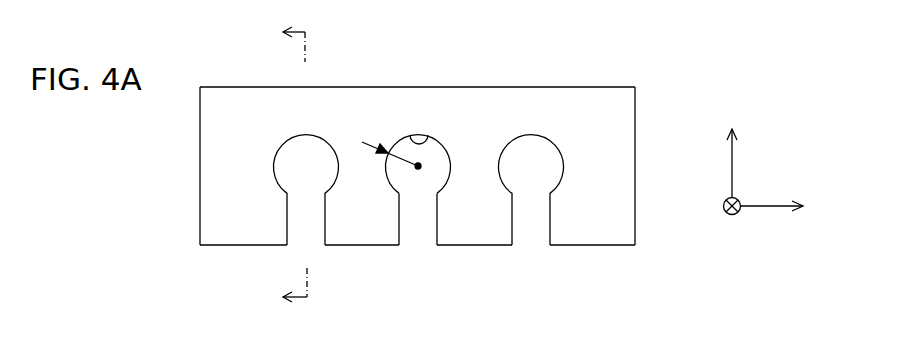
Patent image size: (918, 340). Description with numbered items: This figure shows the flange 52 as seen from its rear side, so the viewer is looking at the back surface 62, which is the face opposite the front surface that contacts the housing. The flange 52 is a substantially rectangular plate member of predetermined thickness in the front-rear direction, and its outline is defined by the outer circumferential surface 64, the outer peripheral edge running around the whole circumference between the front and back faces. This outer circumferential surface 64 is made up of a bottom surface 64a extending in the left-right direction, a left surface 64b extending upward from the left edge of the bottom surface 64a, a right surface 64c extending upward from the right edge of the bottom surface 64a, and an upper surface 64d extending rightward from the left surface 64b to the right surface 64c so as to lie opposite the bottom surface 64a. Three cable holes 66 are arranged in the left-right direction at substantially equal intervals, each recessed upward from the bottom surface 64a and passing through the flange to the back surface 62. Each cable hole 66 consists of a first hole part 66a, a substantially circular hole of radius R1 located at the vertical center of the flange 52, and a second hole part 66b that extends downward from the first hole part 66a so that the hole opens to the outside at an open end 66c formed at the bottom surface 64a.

The flange 52 is at (753, 14).
The back surface 62 is at (613, 125).
The outer circumferential surface 64 is at (228, 80).
The bottom surface 64a is at (228, 246).
The left surface 64b is at (199, 147).
The right surface 64c is at (636, 212).
The upper surface 64d is at (597, 87).
The cable hole 66 is at (330, 164).
The first hole part 66a is at (410, 135).
The second hole part 66b is at (437, 212).
The open end 66c is at (530, 240).
The radius R1 is at (372, 146).